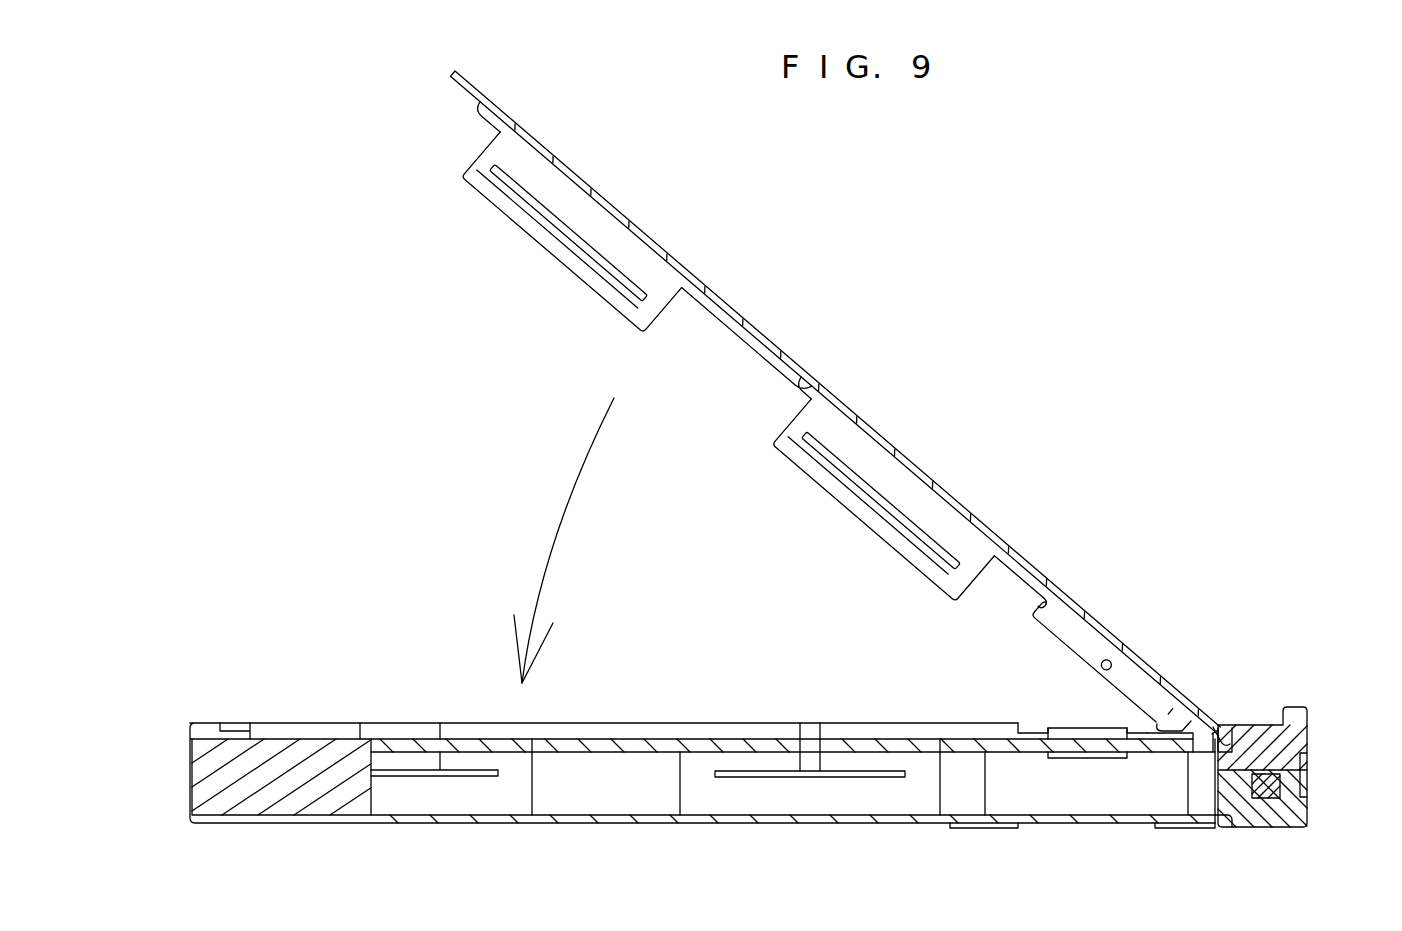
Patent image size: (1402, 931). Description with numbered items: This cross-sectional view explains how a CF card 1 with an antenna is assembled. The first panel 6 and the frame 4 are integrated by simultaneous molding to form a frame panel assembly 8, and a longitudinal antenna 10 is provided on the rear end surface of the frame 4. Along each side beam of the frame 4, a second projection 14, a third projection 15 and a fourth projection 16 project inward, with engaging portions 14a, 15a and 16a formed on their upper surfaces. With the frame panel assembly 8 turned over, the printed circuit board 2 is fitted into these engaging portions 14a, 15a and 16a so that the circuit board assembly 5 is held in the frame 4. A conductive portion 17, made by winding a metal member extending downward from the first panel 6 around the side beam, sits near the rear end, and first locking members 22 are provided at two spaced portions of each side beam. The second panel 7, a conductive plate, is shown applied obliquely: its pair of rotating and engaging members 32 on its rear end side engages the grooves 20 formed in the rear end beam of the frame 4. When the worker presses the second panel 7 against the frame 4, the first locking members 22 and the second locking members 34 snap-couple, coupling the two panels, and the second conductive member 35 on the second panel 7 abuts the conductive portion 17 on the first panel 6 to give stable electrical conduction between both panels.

The CF card 1 is at (1040, 378).
The printed circuit board 2 is at (485, 740).
The frame 4 is at (302, 717).
The circuit board assembly 5 is at (190, 778).
The first panel 6 is at (722, 833).
The second panel 7 is at (673, 222).
The frame panel assembly 8 is at (1318, 700).
The longitudinal antenna 10 is at (1312, 788).
The second projection 14 is at (605, 797).
The engaging portion 14a is at (593, 740).
The third projection 15 is at (958, 800).
The engaging portion 15a is at (955, 740).
The fourth projection 16 is at (1192, 793).
The engaging portion 16a is at (1195, 735).
The conductive portion 17 is at (1083, 732).
The grooves 20 is at (1230, 740).
The first locking member 22 is at (478, 778).
The rotating and engaging member 32 is at (1222, 740).
The second locking member 34 is at (497, 146).
The second conductive member 35 is at (1030, 604).